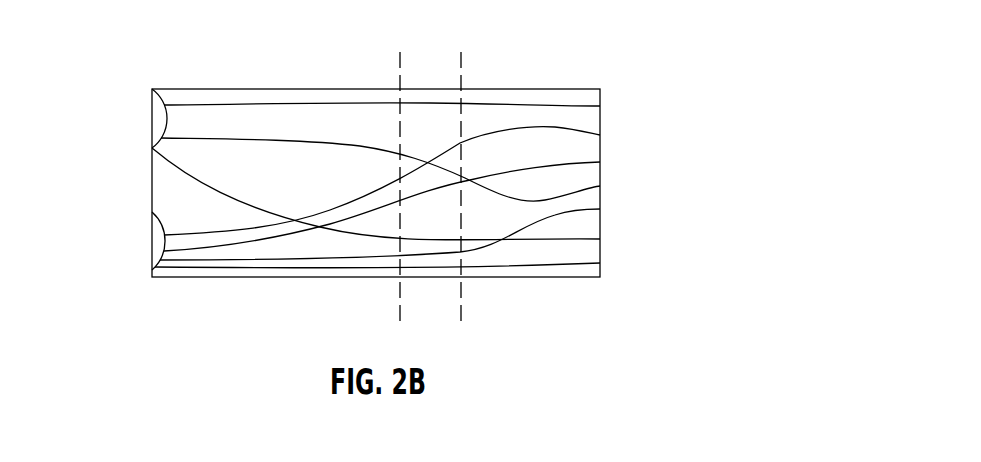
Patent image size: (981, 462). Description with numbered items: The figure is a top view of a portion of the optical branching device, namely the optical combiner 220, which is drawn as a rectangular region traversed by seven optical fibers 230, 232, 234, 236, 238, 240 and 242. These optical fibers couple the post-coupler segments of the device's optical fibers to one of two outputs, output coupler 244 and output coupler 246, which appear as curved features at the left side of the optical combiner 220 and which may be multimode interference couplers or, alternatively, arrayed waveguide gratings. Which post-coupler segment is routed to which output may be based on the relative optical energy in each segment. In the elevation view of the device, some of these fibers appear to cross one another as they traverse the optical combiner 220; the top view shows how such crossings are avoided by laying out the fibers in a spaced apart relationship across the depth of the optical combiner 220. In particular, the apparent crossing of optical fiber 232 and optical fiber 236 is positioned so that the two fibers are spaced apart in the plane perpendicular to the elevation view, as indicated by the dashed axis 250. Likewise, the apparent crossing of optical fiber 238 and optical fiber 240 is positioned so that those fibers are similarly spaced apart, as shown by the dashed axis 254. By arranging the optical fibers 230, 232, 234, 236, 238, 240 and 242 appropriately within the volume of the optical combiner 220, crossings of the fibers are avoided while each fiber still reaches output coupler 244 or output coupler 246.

The optical combiner 220 is at (129, 26).
The optical fiber 230 is at (188, 107).
The optical fiber 232 is at (378, 188).
The optical fiber 234 is at (590, 162).
The optical fiber 236 is at (242, 138).
The optical fiber 238 is at (251, 261).
The optical fiber 240 is at (239, 200).
The optical fiber 242 is at (194, 267).
The output coupler 244 is at (158, 115).
The output coupler 246 is at (160, 245).
The axis 250 is at (399, 75).
The axis 254 is at (462, 75).